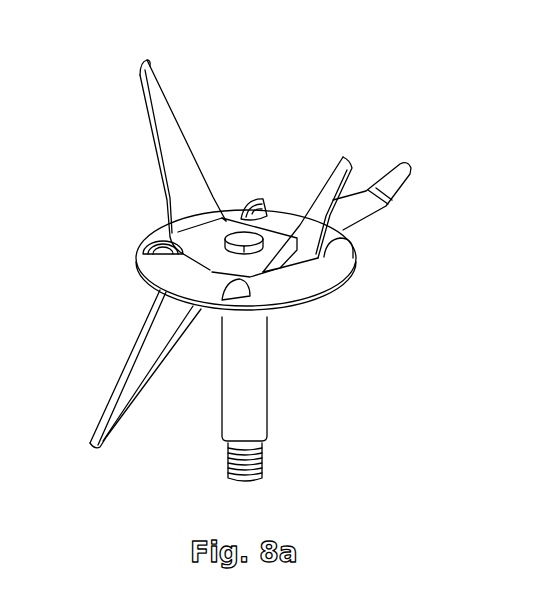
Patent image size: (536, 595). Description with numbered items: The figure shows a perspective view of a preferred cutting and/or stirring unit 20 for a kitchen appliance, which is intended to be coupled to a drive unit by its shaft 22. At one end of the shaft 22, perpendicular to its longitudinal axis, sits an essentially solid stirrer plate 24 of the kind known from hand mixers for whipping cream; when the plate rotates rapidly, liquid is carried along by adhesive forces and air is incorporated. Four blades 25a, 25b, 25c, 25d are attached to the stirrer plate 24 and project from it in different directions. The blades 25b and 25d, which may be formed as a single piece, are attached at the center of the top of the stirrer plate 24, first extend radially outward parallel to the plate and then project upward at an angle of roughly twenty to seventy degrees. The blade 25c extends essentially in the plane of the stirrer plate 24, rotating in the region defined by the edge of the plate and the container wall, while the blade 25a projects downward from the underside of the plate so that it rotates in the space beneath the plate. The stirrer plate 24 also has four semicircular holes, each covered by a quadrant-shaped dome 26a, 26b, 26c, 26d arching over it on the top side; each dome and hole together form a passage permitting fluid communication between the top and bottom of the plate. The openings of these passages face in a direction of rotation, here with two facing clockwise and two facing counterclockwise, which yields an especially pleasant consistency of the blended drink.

The cutting and/or stirring unit 20 is at (289, 88).
The shaft 22 is at (283, 421).
The stirrer plate 24 is at (332, 299).
The blade 25a is at (133, 325).
The blade 25b is at (364, 149).
The blade 25c is at (392, 220).
The blade 25d is at (124, 100).
The quadrant-shaped dome 26a is at (133, 222).
The quadrant-shaped dome 26b is at (213, 322).
The quadrant-shaped dome 26c is at (342, 259).
The quadrant-shaped dome 26d is at (270, 181).